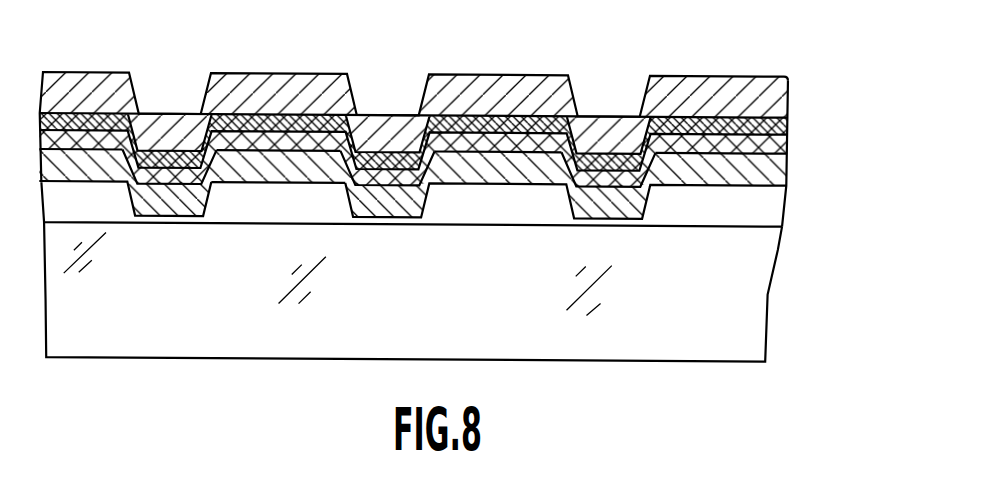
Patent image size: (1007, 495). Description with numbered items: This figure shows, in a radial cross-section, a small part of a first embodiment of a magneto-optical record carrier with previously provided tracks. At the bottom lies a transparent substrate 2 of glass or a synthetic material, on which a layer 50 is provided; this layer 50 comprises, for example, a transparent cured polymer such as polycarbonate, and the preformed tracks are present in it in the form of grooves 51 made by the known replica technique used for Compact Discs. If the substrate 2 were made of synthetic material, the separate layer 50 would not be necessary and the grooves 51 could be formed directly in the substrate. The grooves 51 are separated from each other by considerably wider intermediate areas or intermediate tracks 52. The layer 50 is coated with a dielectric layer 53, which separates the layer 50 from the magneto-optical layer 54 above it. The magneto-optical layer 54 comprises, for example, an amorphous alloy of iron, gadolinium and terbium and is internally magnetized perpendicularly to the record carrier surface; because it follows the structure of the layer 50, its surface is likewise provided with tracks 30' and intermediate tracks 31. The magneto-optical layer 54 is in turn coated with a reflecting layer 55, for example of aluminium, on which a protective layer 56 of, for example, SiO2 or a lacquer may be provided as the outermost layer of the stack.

The transparent substrate 2 is at (753, 303).
The tracks 30' is at (388, 113).
The intermediate tracks 31 is at (273, 140).
The layer 50 is at (758, 204).
The grooves 51 is at (173, 205).
The intermediate tracks 52 is at (259, 188).
The dielectric layer 53 is at (770, 174).
The magneto-optical layer 54 is at (773, 146).
The reflecting layer 55 is at (777, 123).
The protective layer 56 is at (775, 96).